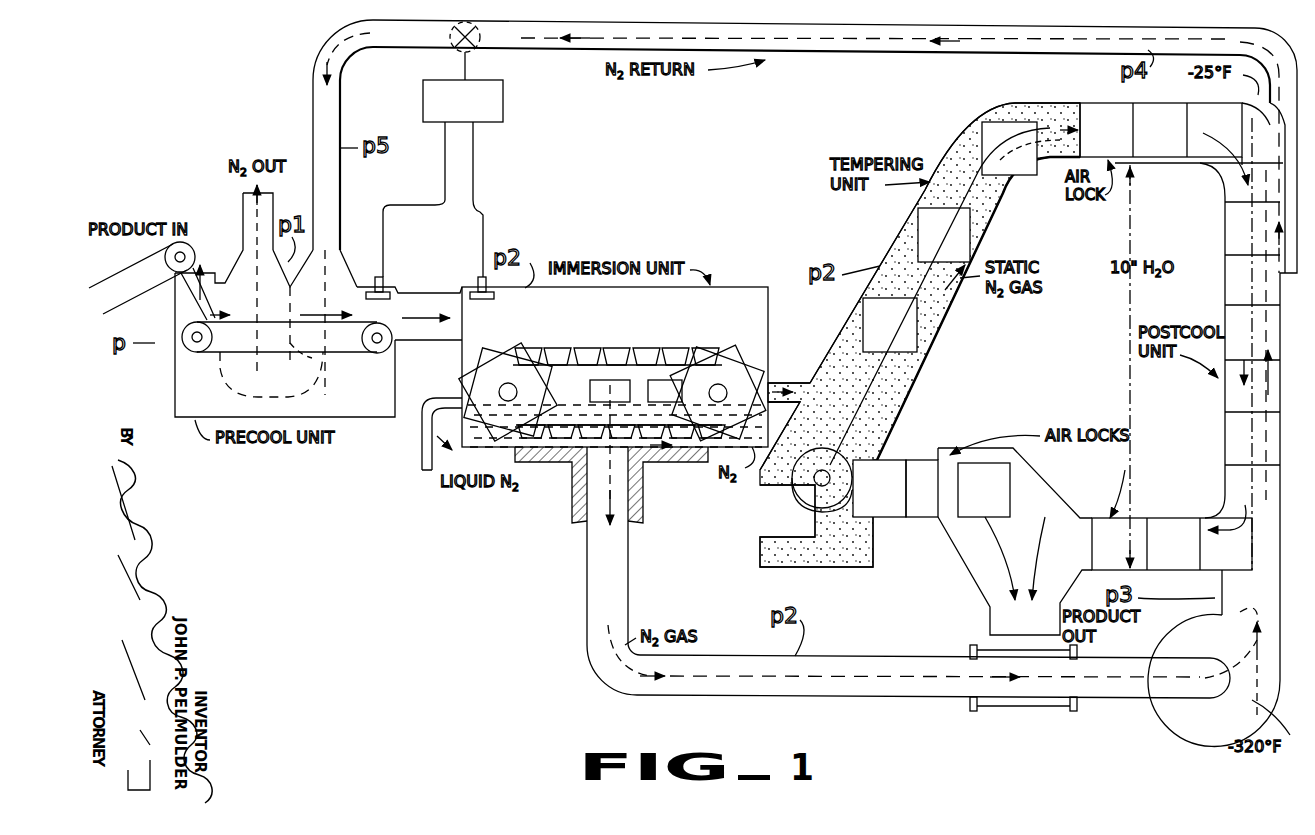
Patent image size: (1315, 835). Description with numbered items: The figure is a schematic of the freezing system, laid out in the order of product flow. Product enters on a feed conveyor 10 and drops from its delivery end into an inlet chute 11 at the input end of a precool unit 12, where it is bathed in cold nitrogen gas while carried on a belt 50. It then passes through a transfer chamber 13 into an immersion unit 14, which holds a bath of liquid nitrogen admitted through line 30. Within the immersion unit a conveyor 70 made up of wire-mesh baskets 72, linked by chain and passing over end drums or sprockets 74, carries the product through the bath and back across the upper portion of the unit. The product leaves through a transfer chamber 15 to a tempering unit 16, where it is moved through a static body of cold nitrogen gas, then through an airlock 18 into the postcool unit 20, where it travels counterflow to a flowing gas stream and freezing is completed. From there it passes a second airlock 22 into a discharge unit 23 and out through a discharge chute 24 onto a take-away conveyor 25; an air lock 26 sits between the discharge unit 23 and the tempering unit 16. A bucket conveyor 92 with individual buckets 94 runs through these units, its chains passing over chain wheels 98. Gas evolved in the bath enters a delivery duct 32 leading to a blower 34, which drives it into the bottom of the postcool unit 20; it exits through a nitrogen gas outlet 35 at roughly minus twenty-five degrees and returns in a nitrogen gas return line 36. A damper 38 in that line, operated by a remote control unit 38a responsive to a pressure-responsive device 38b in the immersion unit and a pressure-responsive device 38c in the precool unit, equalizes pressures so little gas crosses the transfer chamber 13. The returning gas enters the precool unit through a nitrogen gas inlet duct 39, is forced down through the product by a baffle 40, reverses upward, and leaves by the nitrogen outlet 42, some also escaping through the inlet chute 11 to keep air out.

The feed conveyor 10 is at (160, 252).
The inlet chute 11 is at (180, 280).
The precool unit 12 is at (172, 380).
The transfer chamber 13 is at (442, 342).
The immersion unit 14 is at (735, 285).
The transfer chamber 15 is at (792, 390).
The tempering unit 16 is at (890, 228).
The airlock 18 is at (1095, 100).
The postcool unit 20 is at (1215, 398).
The second airlock 22 is at (1195, 515).
The discharge unit 23 is at (1030, 480).
The discharge chute 24 is at (988, 617).
The take-away conveyor 25 is at (960, 648).
The air lock 26 is at (920, 455).
The line 30 is at (420, 458).
The delivery duct 32 is at (585, 565).
The blower 34 is at (1165, 722).
The nitrogen gas outlet 35 is at (1265, 115).
The nitrogen gas return line 36 is at (838, 35).
The damper 38 is at (455, 25).
The remote control unit 38a is at (485, 116).
The pressure-responsive device 38b is at (482, 300).
The pressure-responsive device 38c is at (385, 297).
The nitrogen gas inlet duct 39 is at (348, 268).
The baffle 40 is at (318, 360).
The nitrogen outlet 42 is at (240, 270).
The precool conveyor belt 50 is at (248, 300).
The conveyor 70 is at (630, 345).
The baskets 72 is at (592, 352).
The end drums or sprockets 74 is at (505, 375).
The bucket conveyor 92 is at (950, 165).
The buckets 94 is at (965, 230).
The chain wheels 98 is at (840, 445).